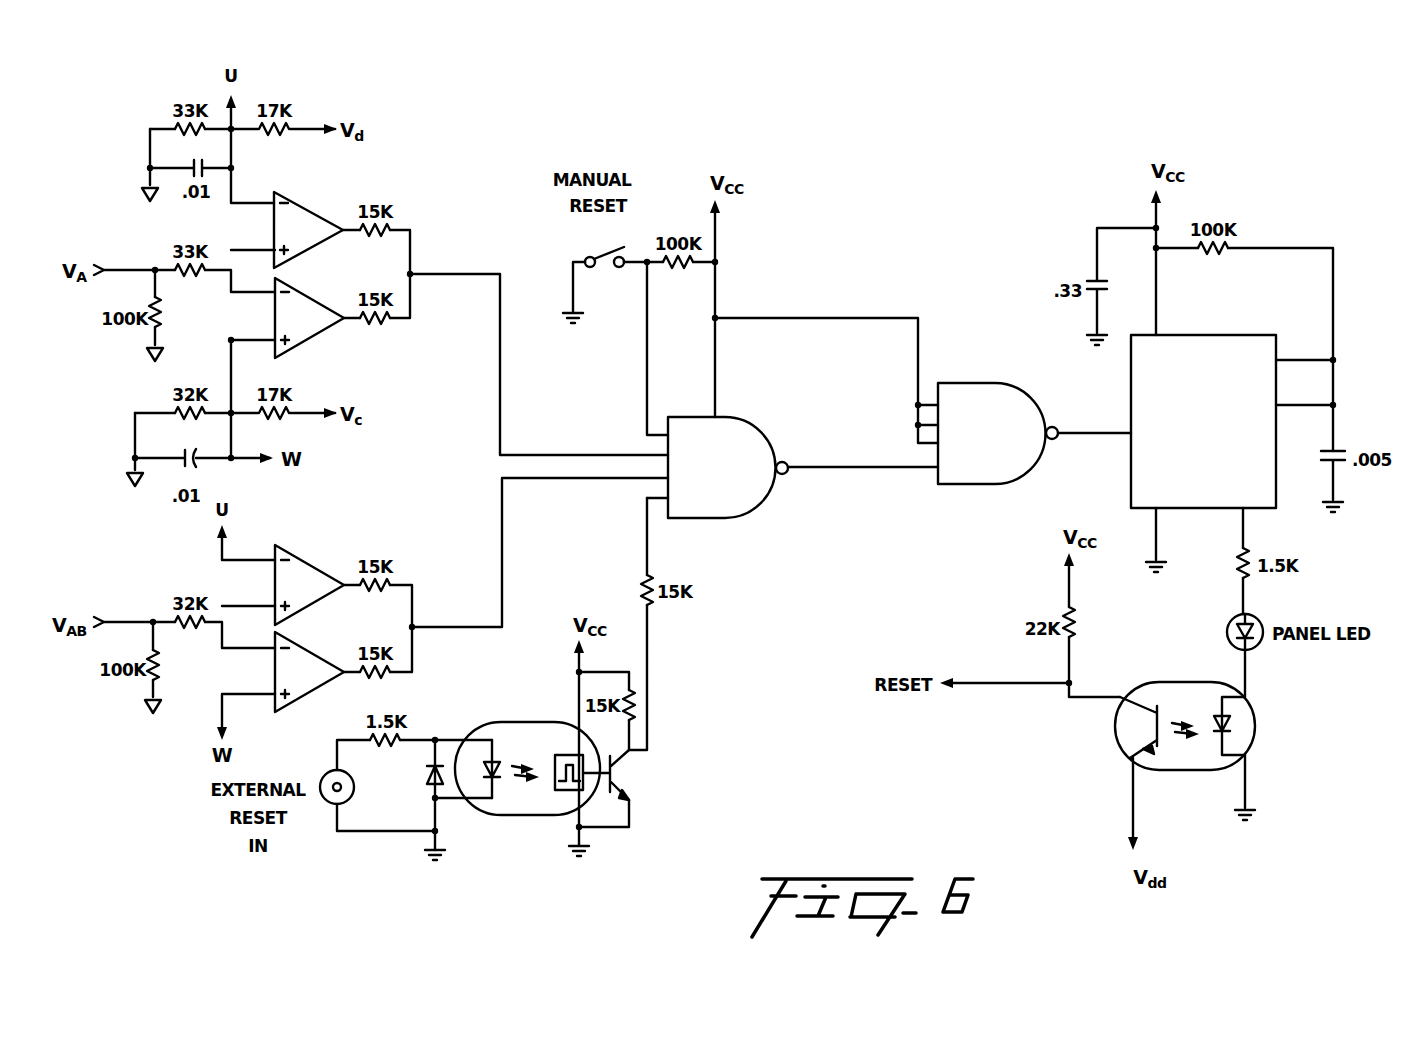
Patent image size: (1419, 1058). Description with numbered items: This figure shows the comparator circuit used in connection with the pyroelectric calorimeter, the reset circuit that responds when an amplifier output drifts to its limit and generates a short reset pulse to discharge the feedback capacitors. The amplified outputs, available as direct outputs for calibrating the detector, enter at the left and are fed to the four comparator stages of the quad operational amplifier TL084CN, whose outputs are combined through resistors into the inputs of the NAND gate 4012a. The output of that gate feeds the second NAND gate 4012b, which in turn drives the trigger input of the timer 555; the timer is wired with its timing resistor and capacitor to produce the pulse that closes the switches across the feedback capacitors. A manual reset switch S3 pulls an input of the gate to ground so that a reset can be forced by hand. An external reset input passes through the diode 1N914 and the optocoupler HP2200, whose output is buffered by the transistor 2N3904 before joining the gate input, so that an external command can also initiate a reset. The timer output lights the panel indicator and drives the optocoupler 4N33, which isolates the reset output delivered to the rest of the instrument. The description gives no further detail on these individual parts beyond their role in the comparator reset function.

The quad operational amplifier TL084CN is at (320, 442).
The diode 1N914 is at (415, 785).
The optocoupler with Schmitt trigger HP2200 is at (527, 754).
The NPN transistor 2N3904 is at (645, 775).
The manual reset switch S3 is at (604, 246).
The NAND gate 4012a is at (728, 467).
The NAND gate 4012b is at (998, 433).
The timer 555 is at (1203, 421).
The optocoupler 4N33 is at (1185, 713).